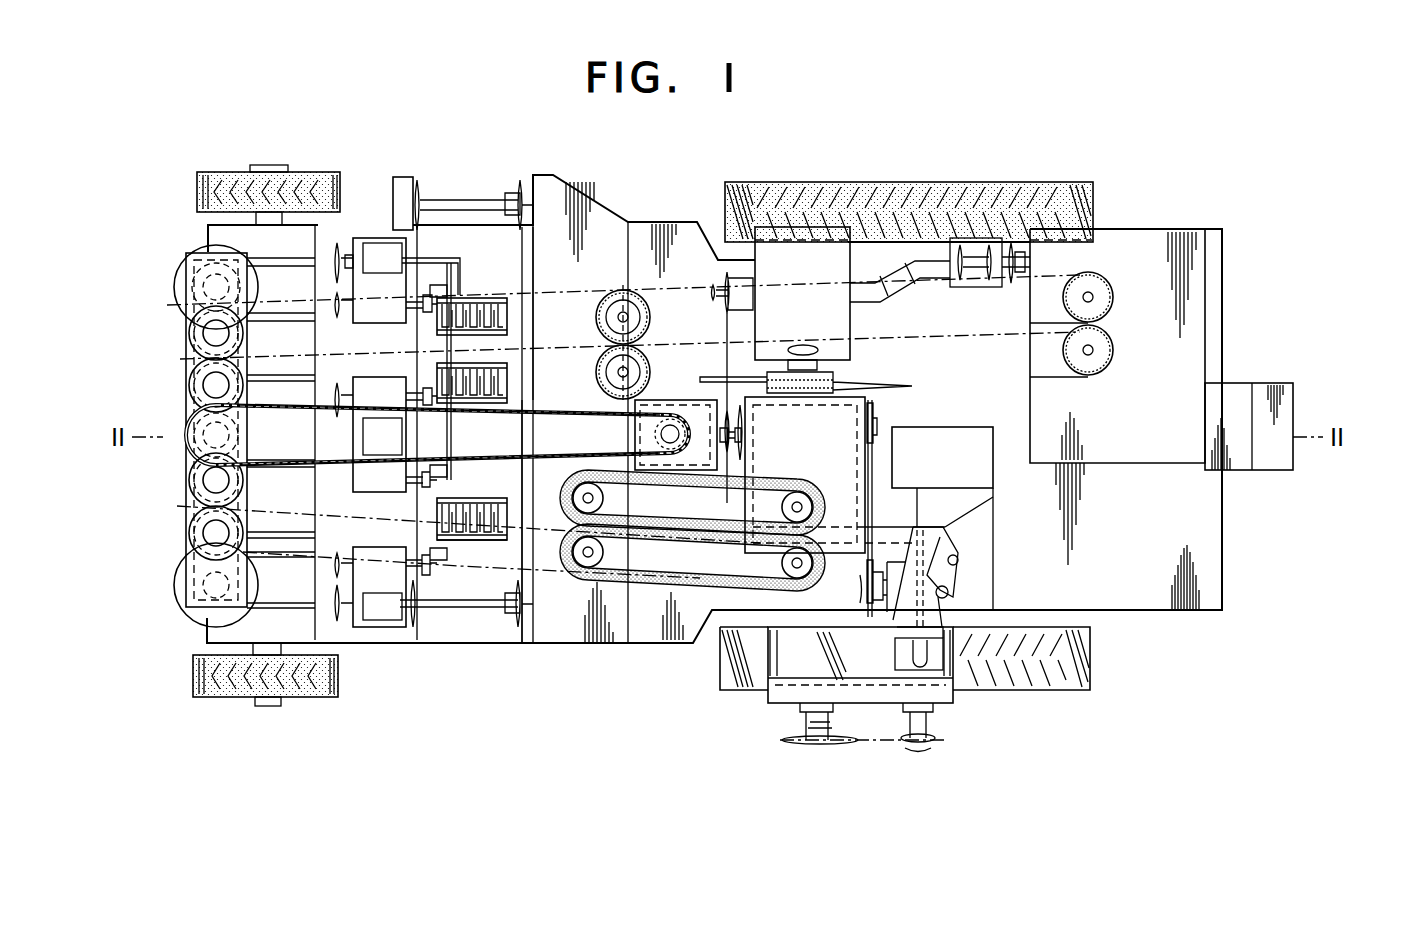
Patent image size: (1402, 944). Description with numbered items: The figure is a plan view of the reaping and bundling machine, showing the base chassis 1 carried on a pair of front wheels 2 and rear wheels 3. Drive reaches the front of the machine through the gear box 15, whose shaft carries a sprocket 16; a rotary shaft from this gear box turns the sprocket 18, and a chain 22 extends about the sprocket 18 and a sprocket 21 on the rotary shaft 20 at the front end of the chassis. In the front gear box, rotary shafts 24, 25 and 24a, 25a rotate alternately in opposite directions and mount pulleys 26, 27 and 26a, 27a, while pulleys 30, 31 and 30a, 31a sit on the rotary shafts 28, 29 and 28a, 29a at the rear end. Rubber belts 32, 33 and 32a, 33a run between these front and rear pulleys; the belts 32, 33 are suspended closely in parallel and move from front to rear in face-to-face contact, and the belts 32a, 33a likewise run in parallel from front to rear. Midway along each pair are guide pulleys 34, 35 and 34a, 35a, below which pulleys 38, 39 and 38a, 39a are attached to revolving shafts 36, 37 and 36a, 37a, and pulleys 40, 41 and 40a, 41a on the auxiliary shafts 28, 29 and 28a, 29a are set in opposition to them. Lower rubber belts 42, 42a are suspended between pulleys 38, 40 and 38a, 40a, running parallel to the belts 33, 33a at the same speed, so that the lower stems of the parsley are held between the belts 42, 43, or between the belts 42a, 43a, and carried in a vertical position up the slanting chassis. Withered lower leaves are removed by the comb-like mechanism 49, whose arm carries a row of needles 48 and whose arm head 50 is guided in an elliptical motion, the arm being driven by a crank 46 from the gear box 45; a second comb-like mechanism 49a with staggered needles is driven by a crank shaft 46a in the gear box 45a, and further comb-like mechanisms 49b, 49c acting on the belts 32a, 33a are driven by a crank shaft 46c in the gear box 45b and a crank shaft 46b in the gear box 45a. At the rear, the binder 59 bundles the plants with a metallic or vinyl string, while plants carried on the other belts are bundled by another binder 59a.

The base chassis 1 is at (1207, 558).
The front wheels 2 is at (307, 172).
The rear wheels 3 is at (767, 182).
The gear box 15 is at (668, 468).
The sprocket 16 is at (737, 458).
The sprocket 18 is at (676, 435).
The rotary shaft 20 is at (246, 436).
The sprocket 21 is at (186, 428).
The chain 22 is at (572, 453).
The rotary shaft 24 is at (204, 484).
The rotary shaft 24a is at (203, 386).
The rotary shaft 25 is at (204, 530).
The rotary shaft 25a is at (203, 333).
The pulley 26 is at (190, 477).
The pulley 26a is at (197, 370).
The pulley 27 is at (191, 534).
The pulley 27a is at (205, 303).
The rotary shaft 28 is at (800, 505).
The rotary shaft 28a is at (1094, 350).
The rotary shaft 29 is at (795, 563).
The rotary shaft 29a is at (1088, 292).
The pulley 30 is at (804, 480).
The pulley 30a is at (1106, 340).
The pulley 31 is at (816, 582).
The pulley 31a is at (1106, 282).
The rubber belt 32 is at (462, 442).
The rubber belt 32a is at (450, 424).
The rubber belt 33 is at (548, 580).
The rubber belt 33a is at (545, 295).
The guide pulley 34 is at (570, 479).
The guide pulley 34a is at (598, 375).
The guide pulley 35 is at (566, 546).
The guide pulley 35a is at (648, 300).
The revolving shaft 36 is at (598, 498).
The revolving shaft 36a is at (632, 368).
The revolving shaft 37 is at (598, 552).
The revolving shaft 37a is at (630, 320).
The pulley 38 is at (566, 495).
The pulley 38a is at (598, 355).
The pulley 39 is at (566, 548).
The pulley 39a is at (598, 310).
The pulley 40 is at (824, 516).
The pulley 40a is at (1103, 372).
The pulley 41 is at (826, 580).
The pulley 41a is at (1113, 302).
The rubber belt 42 is at (764, 480).
The rubber belt 42a is at (897, 333).
The rubber belt 43 is at (672, 530).
The rubber belt 43a is at (772, 284).
The gear box 45 is at (360, 548).
The gear box 45a is at (366, 378).
The gear box 45b is at (362, 321).
The crank 46 is at (405, 560).
The crank shaft 46a is at (408, 482).
The crank shaft 46b is at (412, 388).
The crank shaft 46c is at (410, 316).
The needles 48 is at (437, 523).
The comb-like mechanism 49 is at (468, 540).
The comb-like mechanism 49a is at (470, 498).
The comb-like mechanism 49b is at (480, 405).
The comb-like mechanism 49c is at (474, 298).
The arm head 50 is at (433, 612).
The binder 59 is at (991, 571).
The binder 59a is at (1238, 388).